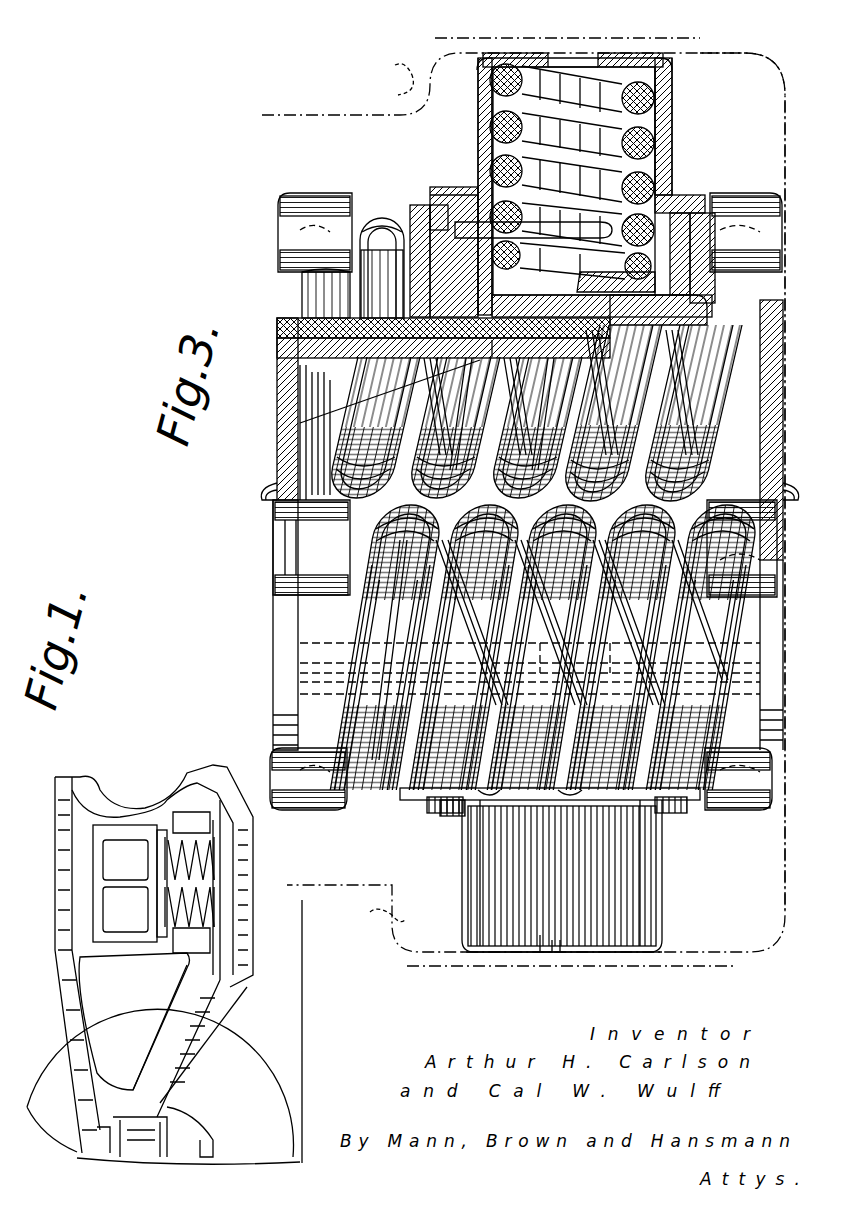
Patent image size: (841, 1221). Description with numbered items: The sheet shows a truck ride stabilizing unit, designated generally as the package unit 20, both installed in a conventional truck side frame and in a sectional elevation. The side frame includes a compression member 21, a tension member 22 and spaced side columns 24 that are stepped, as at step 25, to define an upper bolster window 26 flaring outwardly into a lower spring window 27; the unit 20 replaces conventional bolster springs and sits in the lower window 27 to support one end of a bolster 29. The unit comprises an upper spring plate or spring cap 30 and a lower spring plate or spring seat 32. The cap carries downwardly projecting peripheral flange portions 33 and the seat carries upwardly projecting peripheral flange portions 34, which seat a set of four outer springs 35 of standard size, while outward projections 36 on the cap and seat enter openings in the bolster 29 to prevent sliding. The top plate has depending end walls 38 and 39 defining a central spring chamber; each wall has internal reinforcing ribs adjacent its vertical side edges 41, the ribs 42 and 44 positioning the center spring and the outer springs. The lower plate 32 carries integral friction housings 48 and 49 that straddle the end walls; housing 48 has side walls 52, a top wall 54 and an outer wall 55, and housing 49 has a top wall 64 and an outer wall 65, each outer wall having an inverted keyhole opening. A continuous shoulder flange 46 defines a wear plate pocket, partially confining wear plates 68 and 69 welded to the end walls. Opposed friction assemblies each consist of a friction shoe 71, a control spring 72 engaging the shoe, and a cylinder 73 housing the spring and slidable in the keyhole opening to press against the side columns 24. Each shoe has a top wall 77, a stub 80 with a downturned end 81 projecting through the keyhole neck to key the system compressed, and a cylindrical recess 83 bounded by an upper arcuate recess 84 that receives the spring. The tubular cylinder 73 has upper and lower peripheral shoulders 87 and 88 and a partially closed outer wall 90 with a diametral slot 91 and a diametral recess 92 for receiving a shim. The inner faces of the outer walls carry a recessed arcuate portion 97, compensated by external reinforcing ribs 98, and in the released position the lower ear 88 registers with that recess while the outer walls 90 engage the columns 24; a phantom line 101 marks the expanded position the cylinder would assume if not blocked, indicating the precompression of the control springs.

In FIG. 1, the ride stabilizing unit 20 is at (165, 908).
In FIG. 1, the compression member 21 is at (58, 802).
In FIG. 1, the tension member 22 is at (248, 888).
In FIG. 3, the side columns 24 is at (725, 62).
In FIG. 1, the side columns 24 is at (152, 820).
In FIG. 3, the step 25 is at (398, 92).
In FIG. 1, the step 25 is at (170, 820).
In FIG. 1, the upper bolster window 26 is at (85, 895).
In FIG. 3, the lower spring window 27 is at (760, 72).
In FIG. 1, the lower spring window 27 is at (185, 792).
In FIG. 1, the bolster 29 is at (80, 827).
In FIG. 3, the upper spring plate or spring cap 30 is at (272, 705).
In FIG. 3, the lower spring plate or spring seat 32 is at (783, 360).
In FIG. 3, the peripheral flange portions 33 is at (306, 193).
In FIG. 3, the peripheral flange portions 34 is at (738, 193).
In FIG. 3, the springs 35 is at (510, 462).
In FIG. 3, the outward projections 36 is at (265, 500).
In FIG. 3, the end wall 38 is at (540, 598).
In FIG. 3, the end wall 39 is at (446, 373).
In FIG. 3, the vertical side edge 41 is at (464, 368).
In FIG. 3, the rib 42 is at (312, 545).
In FIG. 3, the rib 44 is at (366, 396).
In FIG. 3, the peripheral shoulder flange 46 is at (457, 598).
In FIG. 3, the friction housing 48 is at (400, 800).
In FIG. 3, the friction housing 49 is at (388, 228).
In FIG. 3, the side walls 52 is at (582, 772).
In FIG. 3, the top wall 54 is at (362, 738).
In FIG. 3, the outer wall 55 is at (506, 770).
In FIG. 3, the top wall 64 is at (386, 236).
In FIG. 3, the outer wall 65 is at (462, 188).
In FIG. 3, the wear plate 68 is at (388, 700).
In FIG. 3, the wear plate 69 is at (531, 368).
In FIG. 3, the friction shoe 71 is at (696, 340).
In FIG. 3, the control spring 72 is at (482, 130).
In FIG. 3, the cylinder 73 is at (672, 118).
In FIG. 3, the top wall 77 is at (419, 205).
In FIG. 3, the stub 80 is at (436, 190).
In FIG. 3, the downturned end 81 is at (452, 195).
In FIG. 1, the downturned end 81 is at (162, 835).
In FIG. 3, the cylindrical recess 83 is at (497, 368).
In FIG. 3, the upper arcuate recess 84 is at (500, 240).
In FIG. 3, the upper peripheral shoulder 87 is at (470, 262).
In FIG. 3, the lower peripheral shoulder 88 is at (672, 198).
In FIG. 3, the outer wall 90 is at (625, 58).
In FIG. 3, the diametral slot 91 is at (560, 60).
In FIG. 3, the diametral recess 92 is at (486, 55).
In FIG. 3, the recessed arcuate portion 97 is at (636, 300).
In FIG. 3, the reinforcing ribs 98 is at (688, 215).
In FIG. 3, the phantom line 101 is at (592, 60).